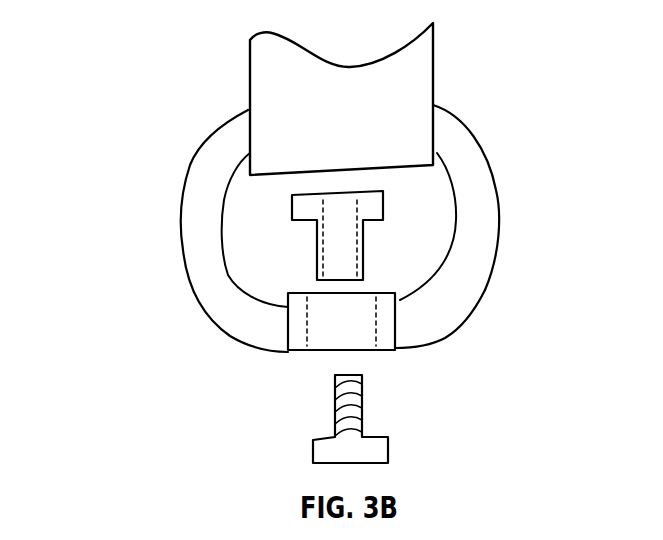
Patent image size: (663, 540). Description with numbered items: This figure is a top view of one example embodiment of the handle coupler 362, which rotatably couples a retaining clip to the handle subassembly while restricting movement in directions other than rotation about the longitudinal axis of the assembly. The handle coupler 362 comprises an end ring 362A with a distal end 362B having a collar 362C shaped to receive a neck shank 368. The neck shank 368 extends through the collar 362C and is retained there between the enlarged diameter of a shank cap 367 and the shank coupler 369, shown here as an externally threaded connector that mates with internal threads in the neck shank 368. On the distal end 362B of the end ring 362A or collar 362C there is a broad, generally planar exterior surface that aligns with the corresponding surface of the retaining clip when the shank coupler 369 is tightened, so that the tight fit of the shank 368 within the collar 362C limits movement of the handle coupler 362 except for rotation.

The handle coupler 362 is at (306, 253).
The end ring 362A is at (473, 163).
The distal end 362B is at (418, 358).
The collar 362C is at (316, 360).
The shank cap 367 is at (292, 219).
The neck shank 368 is at (362, 247).
The shank coupler 369 is at (315, 452).